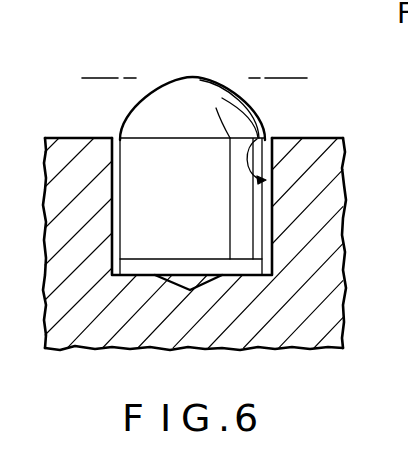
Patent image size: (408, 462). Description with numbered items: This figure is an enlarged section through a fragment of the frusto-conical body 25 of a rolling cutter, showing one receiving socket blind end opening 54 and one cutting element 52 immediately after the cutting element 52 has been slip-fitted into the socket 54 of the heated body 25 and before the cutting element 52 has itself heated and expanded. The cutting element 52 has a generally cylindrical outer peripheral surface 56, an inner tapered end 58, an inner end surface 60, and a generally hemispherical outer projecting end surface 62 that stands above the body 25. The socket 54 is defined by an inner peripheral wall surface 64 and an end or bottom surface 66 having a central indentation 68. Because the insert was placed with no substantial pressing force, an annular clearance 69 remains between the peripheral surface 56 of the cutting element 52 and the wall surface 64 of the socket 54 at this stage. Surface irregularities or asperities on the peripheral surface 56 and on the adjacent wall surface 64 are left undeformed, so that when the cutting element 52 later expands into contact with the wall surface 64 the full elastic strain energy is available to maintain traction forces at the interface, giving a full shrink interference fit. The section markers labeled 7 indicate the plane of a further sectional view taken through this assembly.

The section line 7- 7 is at (92, 78).
The frusto-conical body 25 is at (340, 137).
The cutting element 52 is at (208, 77).
The receiving socket blind end opening 54 is at (262, 135).
The cylindrical outer peripheral surface 56 is at (207, 203).
The inner tapered end 58 is at (242, 267).
The inner end surface 60 is at (157, 276).
The hemispherical outer projecting end surface 62 is at (175, 100).
The inner peripheral wall surface 64 is at (113, 161).
The bottom surface 66 is at (140, 274).
The central indentation 68 is at (195, 287).
The annular clearance 69 is at (115, 137).